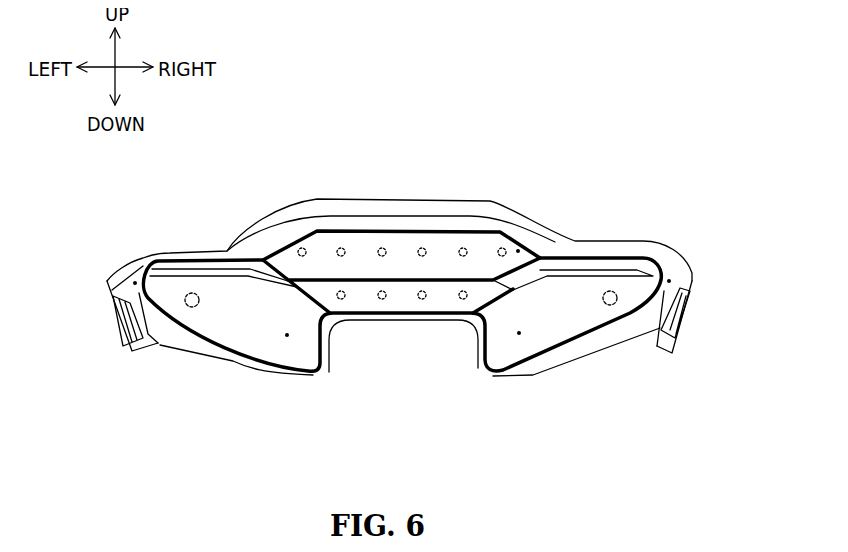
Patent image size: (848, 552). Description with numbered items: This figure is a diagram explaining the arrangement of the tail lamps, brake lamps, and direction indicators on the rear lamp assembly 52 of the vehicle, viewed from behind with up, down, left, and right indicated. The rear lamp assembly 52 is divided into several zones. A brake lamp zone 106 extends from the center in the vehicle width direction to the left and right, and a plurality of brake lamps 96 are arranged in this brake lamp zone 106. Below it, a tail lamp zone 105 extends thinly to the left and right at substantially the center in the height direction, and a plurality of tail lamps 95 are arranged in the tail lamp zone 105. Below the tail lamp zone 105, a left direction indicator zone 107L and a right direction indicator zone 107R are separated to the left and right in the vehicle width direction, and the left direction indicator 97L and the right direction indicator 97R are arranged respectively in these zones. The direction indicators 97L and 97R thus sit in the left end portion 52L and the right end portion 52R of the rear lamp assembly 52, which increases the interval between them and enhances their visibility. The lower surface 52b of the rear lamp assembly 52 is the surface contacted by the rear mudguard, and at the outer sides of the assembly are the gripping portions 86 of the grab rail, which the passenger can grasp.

The rear lamp assembly 52 is at (552, 214).
The left end portion 52L is at (127, 275).
The right end portion 52R is at (662, 273).
The lower surface 52b is at (354, 315).
The gripping portion 86 is at (108, 306).
The tail lamp 95 is at (454, 293).
The brake lamp 96 is at (494, 240).
The left direction indicator 97L is at (187, 300).
The right direction indicator 97R is at (604, 298).
The tail lamp zone 105 is at (595, 255).
The brake lamp zone 106 is at (511, 241).
The left direction indicator zone 107L is at (279, 328).
The right direction indicator zone 107R is at (511, 326).